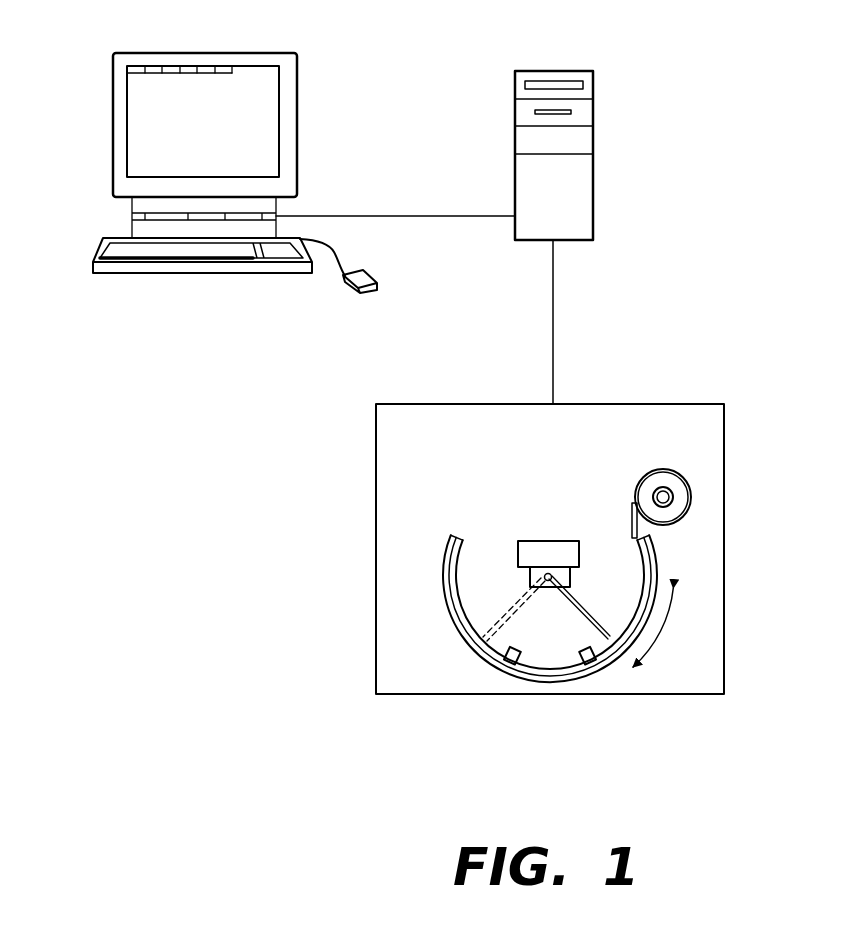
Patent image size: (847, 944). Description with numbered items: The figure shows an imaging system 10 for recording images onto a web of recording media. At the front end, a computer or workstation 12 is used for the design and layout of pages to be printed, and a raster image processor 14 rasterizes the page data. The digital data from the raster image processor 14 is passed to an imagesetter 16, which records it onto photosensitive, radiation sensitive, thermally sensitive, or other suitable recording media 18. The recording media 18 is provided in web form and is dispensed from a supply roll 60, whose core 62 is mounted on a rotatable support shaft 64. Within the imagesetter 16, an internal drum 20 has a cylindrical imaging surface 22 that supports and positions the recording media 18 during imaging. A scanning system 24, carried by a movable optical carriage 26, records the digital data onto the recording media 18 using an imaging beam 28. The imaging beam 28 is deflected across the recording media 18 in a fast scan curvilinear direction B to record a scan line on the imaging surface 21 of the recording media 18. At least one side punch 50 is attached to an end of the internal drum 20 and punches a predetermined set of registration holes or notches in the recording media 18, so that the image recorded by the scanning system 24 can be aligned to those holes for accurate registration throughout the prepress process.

The imaging system 10 is at (745, 325).
The front end computer or workstation 12 is at (143, 208).
The raster image processor 14 is at (521, 115).
The imagesetter 16 is at (395, 455).
The recording media 18 is at (556, 667).
The internal drum 20 is at (444, 592).
The imaging surface of the recording media 21 is at (462, 556).
The cylindrical imaging surface 22 is at (447, 556).
The scanning system 24 is at (530, 574).
The movable optical carriage 26 is at (540, 542).
The imaging beam 28 is at (604, 597).
The side punch 50 is at (508, 663).
The supply roll 60 is at (692, 469).
The core 62 is at (668, 489).
The rotatable support shaft 64 is at (658, 490).
The fast scan curvilinear direction B is at (665, 627).